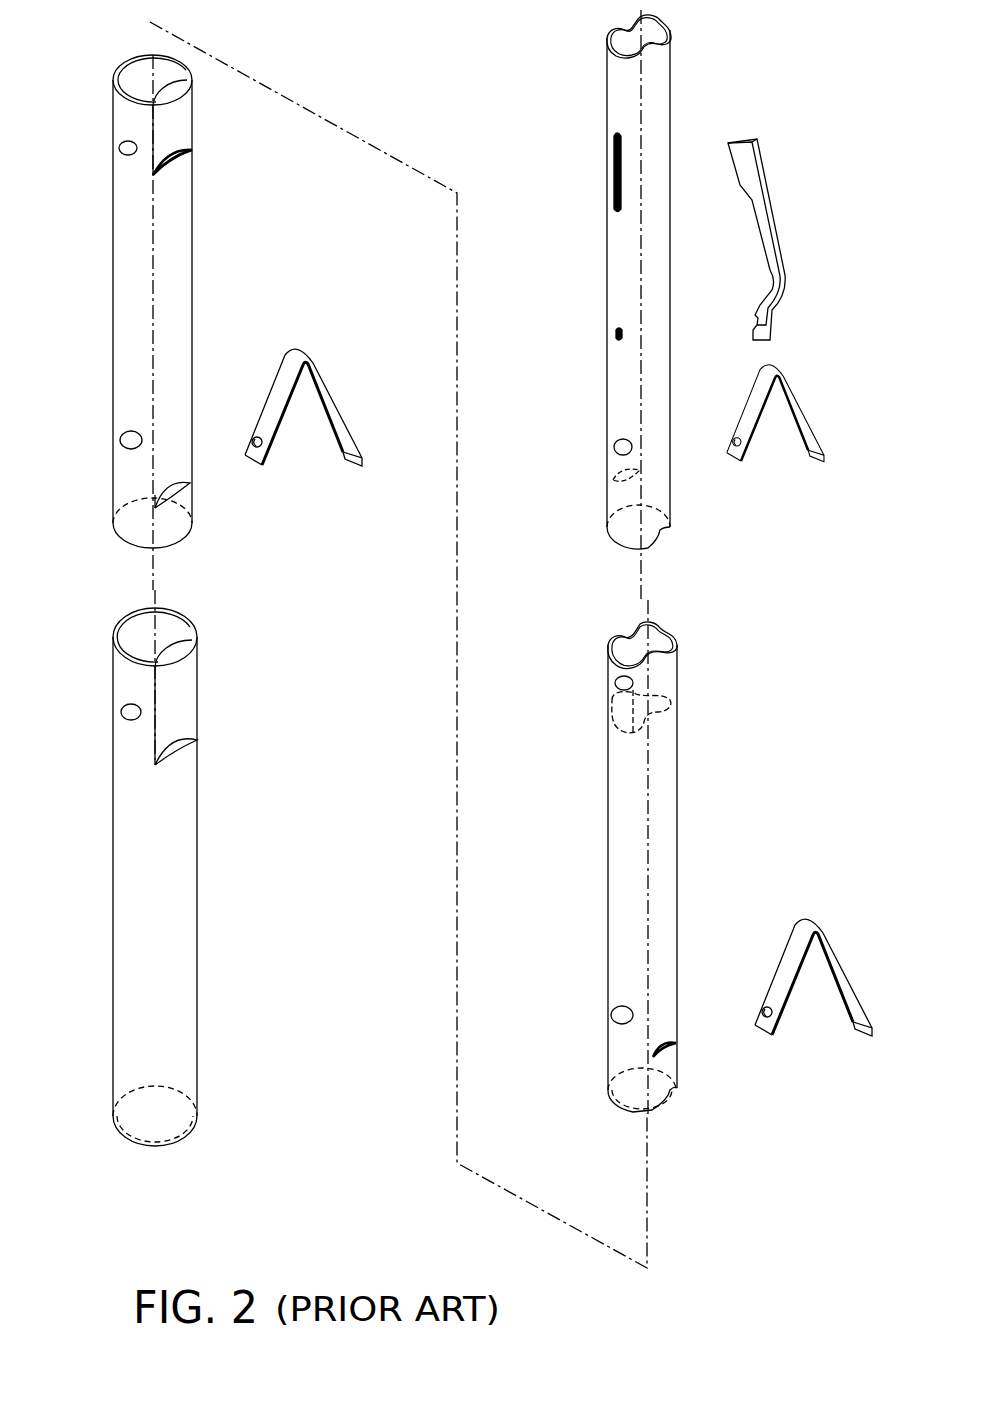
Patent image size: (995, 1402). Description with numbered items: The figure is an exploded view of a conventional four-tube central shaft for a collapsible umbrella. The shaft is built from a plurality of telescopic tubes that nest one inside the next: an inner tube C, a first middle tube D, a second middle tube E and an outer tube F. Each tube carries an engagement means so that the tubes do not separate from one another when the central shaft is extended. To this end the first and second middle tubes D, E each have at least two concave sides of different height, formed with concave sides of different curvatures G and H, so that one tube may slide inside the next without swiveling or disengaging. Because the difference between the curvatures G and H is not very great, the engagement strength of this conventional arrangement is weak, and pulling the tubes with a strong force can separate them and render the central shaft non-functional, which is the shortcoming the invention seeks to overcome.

The second middle tube E is at (120, 318).
The outer tube F is at (118, 886).
The inner tube C is at (615, 294).
The first middle tube D is at (614, 856).
The concave side of first curvature G is at (178, 118).
The concave side of second curvature H is at (186, 296).